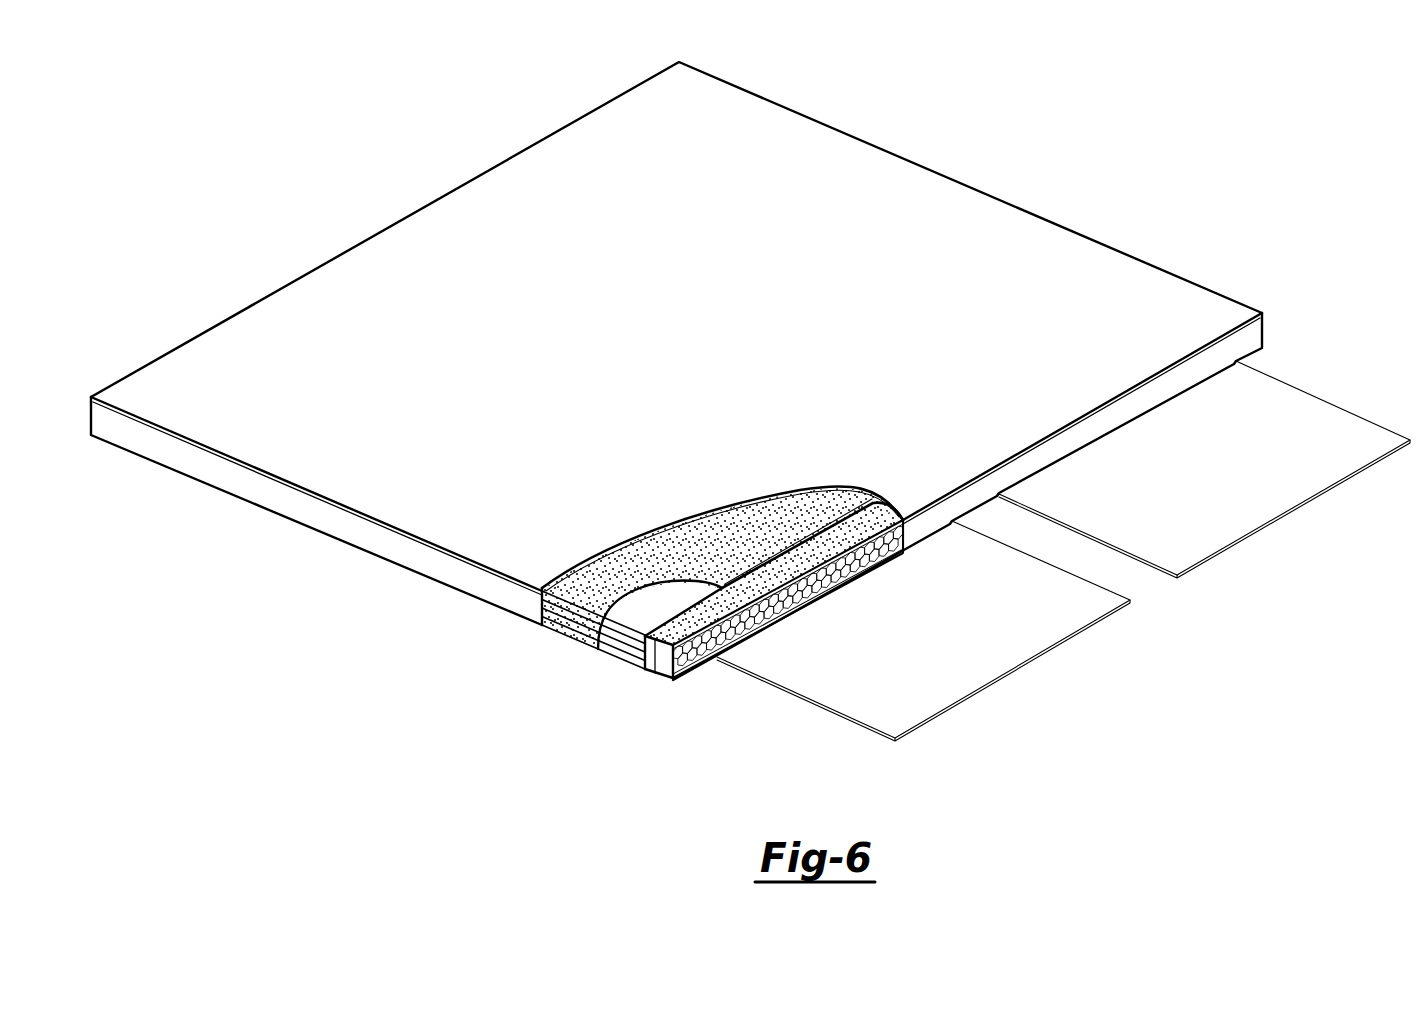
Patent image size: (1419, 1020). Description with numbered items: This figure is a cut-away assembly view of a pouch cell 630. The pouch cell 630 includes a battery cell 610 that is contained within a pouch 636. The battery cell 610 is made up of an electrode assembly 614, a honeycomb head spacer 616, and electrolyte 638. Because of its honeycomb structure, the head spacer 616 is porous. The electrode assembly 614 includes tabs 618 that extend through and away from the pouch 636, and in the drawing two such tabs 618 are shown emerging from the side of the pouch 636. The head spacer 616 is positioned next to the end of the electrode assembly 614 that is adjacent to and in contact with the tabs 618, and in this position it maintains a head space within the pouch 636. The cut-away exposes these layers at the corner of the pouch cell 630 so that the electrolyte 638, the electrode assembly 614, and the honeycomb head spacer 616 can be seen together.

The pouch cell 630 is at (750, 424).
The pouch 636 is at (858, 172).
The electrolyte 638 is at (702, 522).
The honeycomb head spacer 616 is at (750, 613).
The electrode assembly 614 is at (633, 610).
The tabs 618 is at (1255, 512).
The battery cell 610 is at (722, 608).